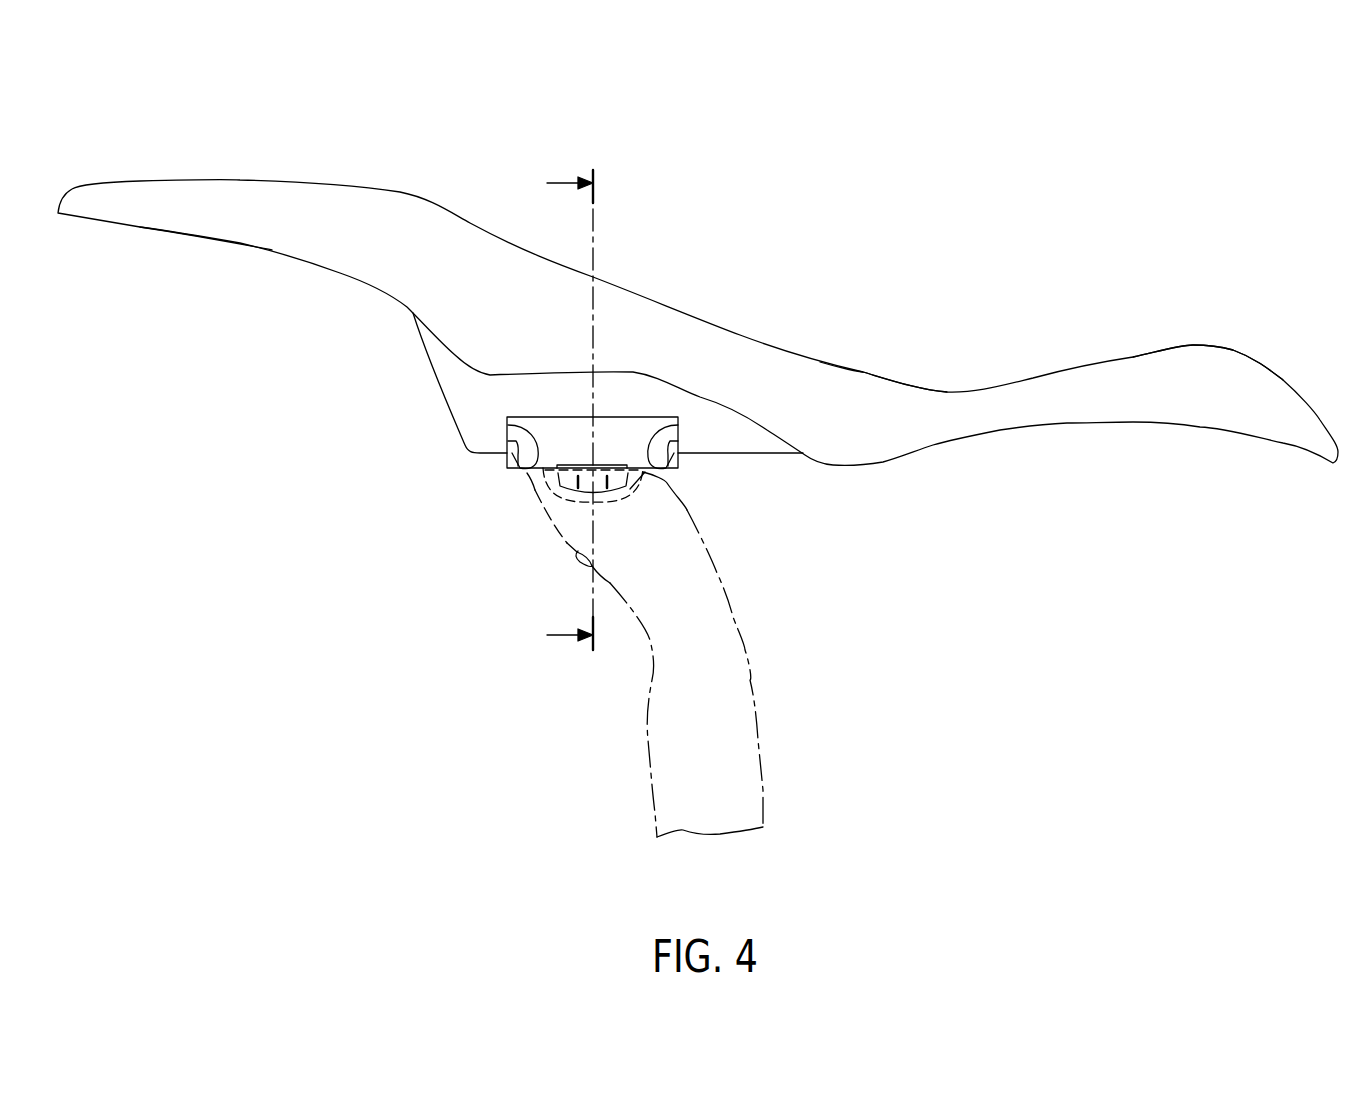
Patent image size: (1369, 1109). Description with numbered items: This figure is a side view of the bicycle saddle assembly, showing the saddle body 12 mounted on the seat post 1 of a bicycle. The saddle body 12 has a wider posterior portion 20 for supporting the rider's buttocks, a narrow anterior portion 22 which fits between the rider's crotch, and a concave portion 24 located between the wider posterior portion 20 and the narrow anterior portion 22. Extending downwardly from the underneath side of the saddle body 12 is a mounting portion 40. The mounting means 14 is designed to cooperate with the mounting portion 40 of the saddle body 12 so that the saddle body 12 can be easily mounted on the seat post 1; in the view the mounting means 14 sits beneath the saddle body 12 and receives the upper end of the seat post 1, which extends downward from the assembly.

The seat post 1 is at (755, 715).
The saddle body 12 is at (272, 211).
The mounting means 14 is at (576, 440).
The wider posterior portion 20 is at (233, 180).
The narrow anterior portion 22 is at (1233, 348).
The concave portion 24 is at (863, 372).
The mounting portion 40 is at (473, 387).